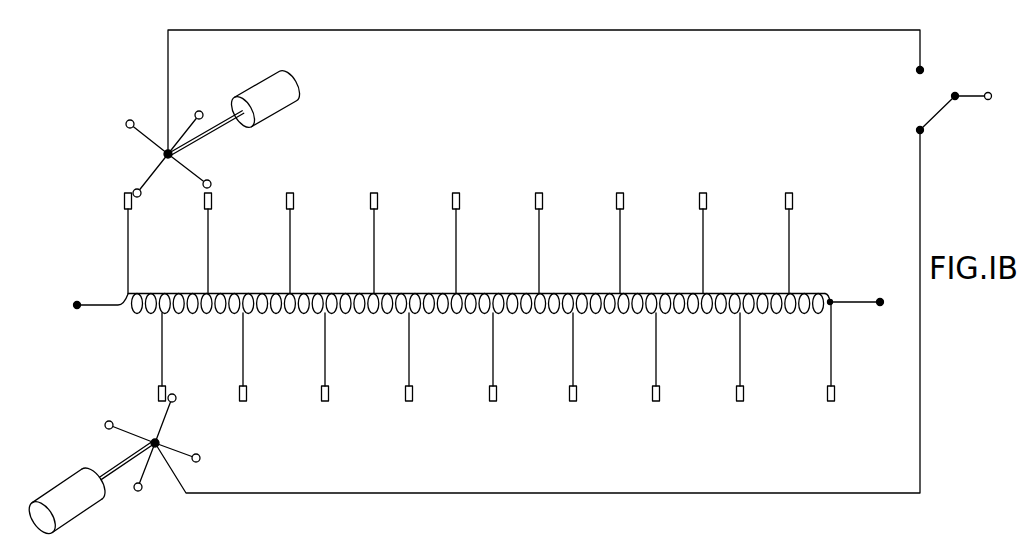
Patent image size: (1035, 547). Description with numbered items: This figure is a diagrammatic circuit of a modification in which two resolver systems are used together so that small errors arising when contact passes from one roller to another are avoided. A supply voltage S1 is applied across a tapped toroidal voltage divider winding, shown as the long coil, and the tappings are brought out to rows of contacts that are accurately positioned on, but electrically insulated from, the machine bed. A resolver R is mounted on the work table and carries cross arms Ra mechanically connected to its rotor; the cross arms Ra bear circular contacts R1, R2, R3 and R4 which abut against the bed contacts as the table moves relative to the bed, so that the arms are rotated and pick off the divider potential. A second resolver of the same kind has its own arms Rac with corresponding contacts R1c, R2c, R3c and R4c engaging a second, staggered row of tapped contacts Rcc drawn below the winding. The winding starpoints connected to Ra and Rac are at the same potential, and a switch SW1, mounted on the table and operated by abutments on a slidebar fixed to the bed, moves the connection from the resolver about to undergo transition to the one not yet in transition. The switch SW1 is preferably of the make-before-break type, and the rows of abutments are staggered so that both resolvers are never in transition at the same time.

The resolver R is at (287, 98).
The cross arms Ra is at (166, 160).
The circular contact R1 is at (145, 175).
The circular contact R2 is at (146, 123).
The circular contact R3 is at (201, 111).
The circular contact R4 is at (211, 183).
The lower tapped resistors Rcc is at (478, 406).
The cross arms of second resolver Rac is at (158, 440).
The first compensating contact R1c is at (120, 420).
The second compensating contact R2c is at (175, 394).
The third compensating contact R3c is at (200, 458).
The fourth compensating contact R4c is at (141, 491).
The supply voltage S1 is at (476, 305).
The switch SW1 is at (942, 100).